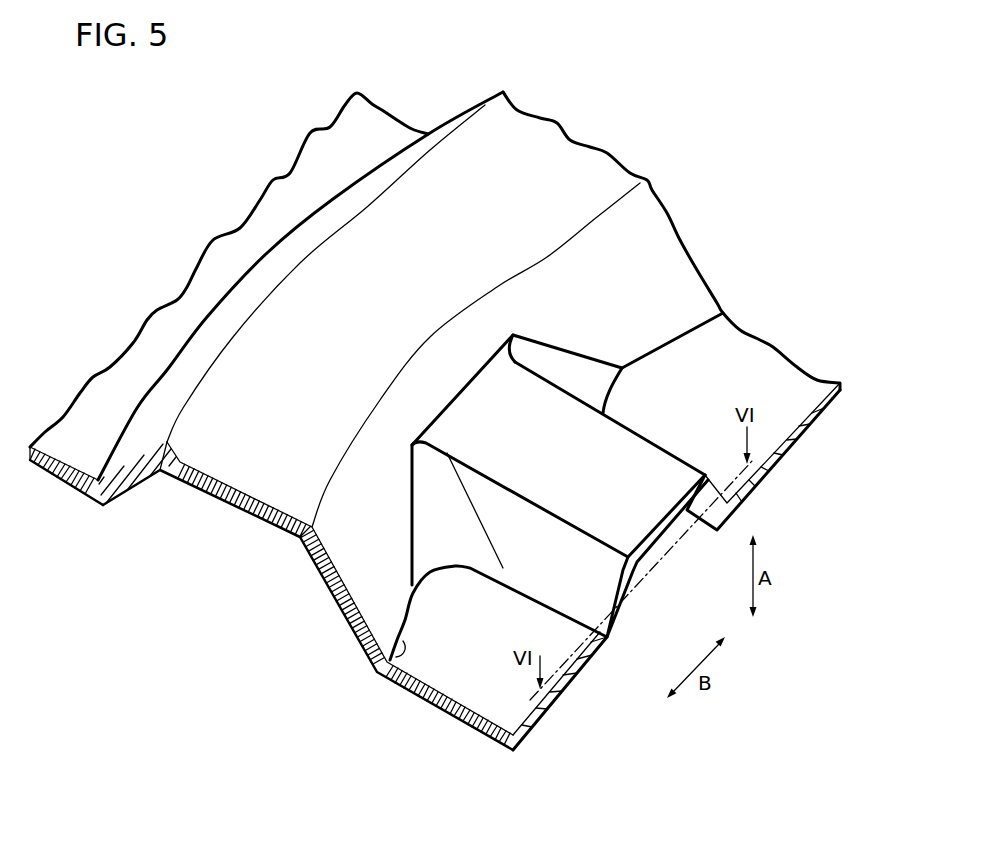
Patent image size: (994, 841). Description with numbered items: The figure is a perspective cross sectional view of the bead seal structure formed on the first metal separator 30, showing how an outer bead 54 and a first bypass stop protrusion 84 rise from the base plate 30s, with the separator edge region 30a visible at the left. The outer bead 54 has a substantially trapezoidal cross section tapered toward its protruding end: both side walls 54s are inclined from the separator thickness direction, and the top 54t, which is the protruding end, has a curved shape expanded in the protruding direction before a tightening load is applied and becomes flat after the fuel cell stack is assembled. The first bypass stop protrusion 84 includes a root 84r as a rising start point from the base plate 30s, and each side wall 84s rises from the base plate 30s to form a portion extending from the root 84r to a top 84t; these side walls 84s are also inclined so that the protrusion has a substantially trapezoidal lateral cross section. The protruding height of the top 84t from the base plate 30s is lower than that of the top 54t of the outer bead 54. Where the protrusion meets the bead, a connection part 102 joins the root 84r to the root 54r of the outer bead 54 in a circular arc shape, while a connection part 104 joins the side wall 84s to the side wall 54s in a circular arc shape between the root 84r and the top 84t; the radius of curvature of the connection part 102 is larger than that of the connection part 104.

The first metal separator 30 is at (204, 231).
The flange portion 30a is at (98, 403).
The base plate 30s is at (493, 693).
The outer bead 54 is at (437, 184).
The side wall of outer bead 54s is at (173, 388).
The top of outer bead 54t is at (557, 148).
The root of outer bead 54r is at (402, 648).
The first bypass stop protrusion 84 is at (460, 420).
The side wall of first bypass stop protrusion 84s is at (529, 528).
The top of first bypass stop protrusion 84t is at (643, 505).
The root of first bypass stop protrusion 84r is at (553, 605).
The connection part 102 is at (630, 393).
The connection part 104 is at (545, 357).